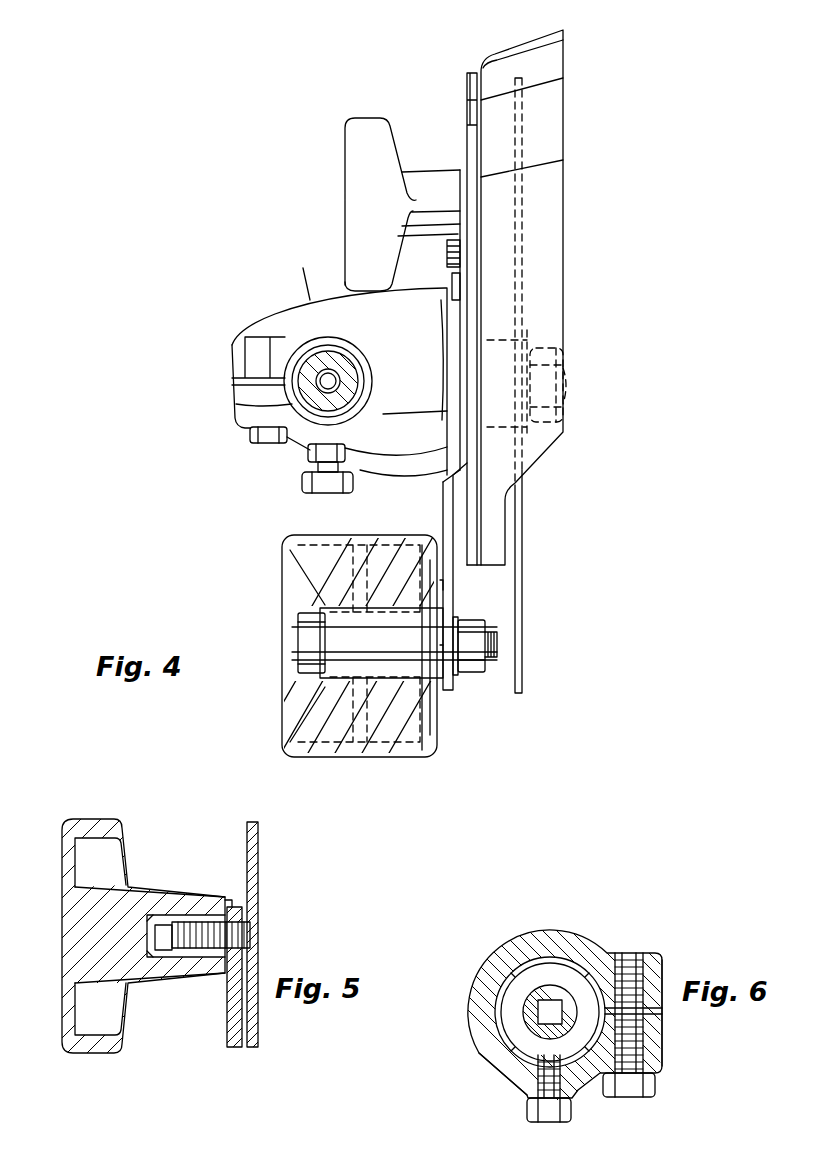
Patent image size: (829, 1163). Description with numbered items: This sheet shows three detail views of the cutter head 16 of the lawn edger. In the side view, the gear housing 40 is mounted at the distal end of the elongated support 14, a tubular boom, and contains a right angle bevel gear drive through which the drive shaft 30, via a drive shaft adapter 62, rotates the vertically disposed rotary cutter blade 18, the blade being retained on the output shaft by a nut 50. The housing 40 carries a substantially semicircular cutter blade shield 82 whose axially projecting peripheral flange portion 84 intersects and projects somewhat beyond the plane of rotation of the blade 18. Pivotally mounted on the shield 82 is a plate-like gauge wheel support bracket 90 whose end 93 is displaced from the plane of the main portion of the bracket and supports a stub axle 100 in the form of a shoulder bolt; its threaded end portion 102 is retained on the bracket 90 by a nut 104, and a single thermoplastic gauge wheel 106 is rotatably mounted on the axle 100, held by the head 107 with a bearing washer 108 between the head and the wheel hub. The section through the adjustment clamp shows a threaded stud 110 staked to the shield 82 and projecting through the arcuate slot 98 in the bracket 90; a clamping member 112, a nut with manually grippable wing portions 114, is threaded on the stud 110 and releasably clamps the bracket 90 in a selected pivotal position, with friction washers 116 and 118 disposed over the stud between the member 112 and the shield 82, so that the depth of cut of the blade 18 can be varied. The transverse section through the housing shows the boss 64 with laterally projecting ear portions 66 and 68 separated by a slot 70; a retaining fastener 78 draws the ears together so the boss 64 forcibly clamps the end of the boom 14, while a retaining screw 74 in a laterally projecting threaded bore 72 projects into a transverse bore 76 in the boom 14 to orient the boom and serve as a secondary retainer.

In FIG. 4, the elongated support 14 is at (298, 400).
In FIG. 6, the elongated support 14 is at (583, 947).
In FIG. 4, the cutter head 16 is at (303, 268).
In FIG. 4, the rotary cutter blade 18 is at (522, 605).
In FIG. 6, the drive shaft 30 is at (545, 1015).
In FIG. 4, the housing 40 is at (270, 324).
In FIG. 4, the nut 50 is at (549, 347).
In FIG. 6, the drive shaft adapter 62 is at (530, 997).
In FIG. 4, the boss 64 is at (305, 450).
In FIG. 6, the boss 64 is at (550, 930).
In FIG. 6, the ear portion 66 is at (665, 968).
In FIG. 6, the ear portion 68 is at (665, 1048).
In FIG. 6, the slot 70 is at (660, 1012).
In FIG. 6, the threaded bore 72 is at (528, 1100).
In FIG. 4, the retaining screw 74 is at (262, 445).
In FIG. 6, the retaining screw 74 is at (570, 1115).
In FIG. 6, the transverse bore 76 is at (520, 1090).
In FIG. 6, the retaining fastener 78 is at (657, 1090).
In FIG. 5, the cutter blade shield 82 is at (258, 866).
In FIG. 4, the peripheral flange portion 84 is at (513, 47).
In FIG. 4, the gauge wheel support bracket 90 is at (472, 445).
In FIG. 4, the end of the bracket 93 is at (450, 571).
In FIG. 5, the arcuate slot 98 is at (258, 938).
In FIG. 4, the stub axle 100 is at (418, 650).
In FIG. 4, the threaded end portion 102 is at (500, 645).
In FIG. 4, the nut 104 is at (477, 675).
In FIG. 4, the gauge wheel 106 is at (420, 752).
In FIG. 4, the head 107 is at (305, 645).
In FIG. 4, the bearing washer 108 is at (320, 607).
In FIG. 5, the threaded stud 110 is at (205, 945).
In FIG. 4, the clamping member 112 is at (441, 172).
In FIG. 5, the clamping member 112 is at (175, 893).
In FIG. 5, the wing portions 114 is at (92, 820).
In FIG. 5, the friction washer 116 is at (225, 900).
In FIG. 5, the friction washer 118 is at (245, 910).